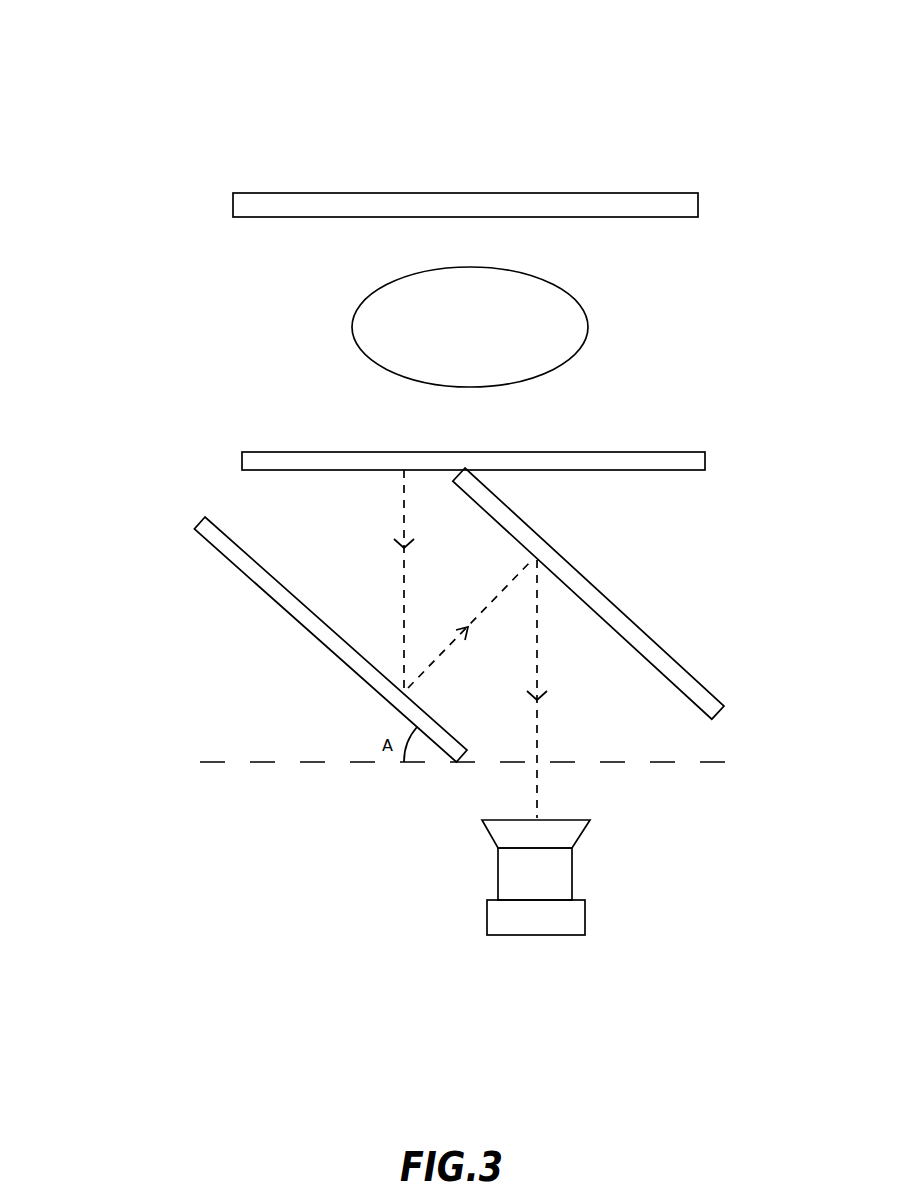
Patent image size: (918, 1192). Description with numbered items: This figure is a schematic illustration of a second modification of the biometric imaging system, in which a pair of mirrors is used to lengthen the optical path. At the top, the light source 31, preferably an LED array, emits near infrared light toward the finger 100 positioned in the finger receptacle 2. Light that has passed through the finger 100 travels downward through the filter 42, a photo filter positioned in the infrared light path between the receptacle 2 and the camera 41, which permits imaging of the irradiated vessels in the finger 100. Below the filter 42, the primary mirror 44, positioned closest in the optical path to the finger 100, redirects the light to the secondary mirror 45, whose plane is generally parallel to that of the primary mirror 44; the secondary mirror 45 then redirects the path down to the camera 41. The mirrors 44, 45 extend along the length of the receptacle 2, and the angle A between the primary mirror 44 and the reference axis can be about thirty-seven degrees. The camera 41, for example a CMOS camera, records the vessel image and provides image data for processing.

The light source 31 is at (470, 192).
The finger receptacle 2 is at (608, 260).
The finger 100 is at (555, 323).
The filter 42 is at (275, 460).
The primary mirror 44 is at (240, 565).
The secondary mirror 45 is at (602, 595).
The camera 41 is at (555, 867).